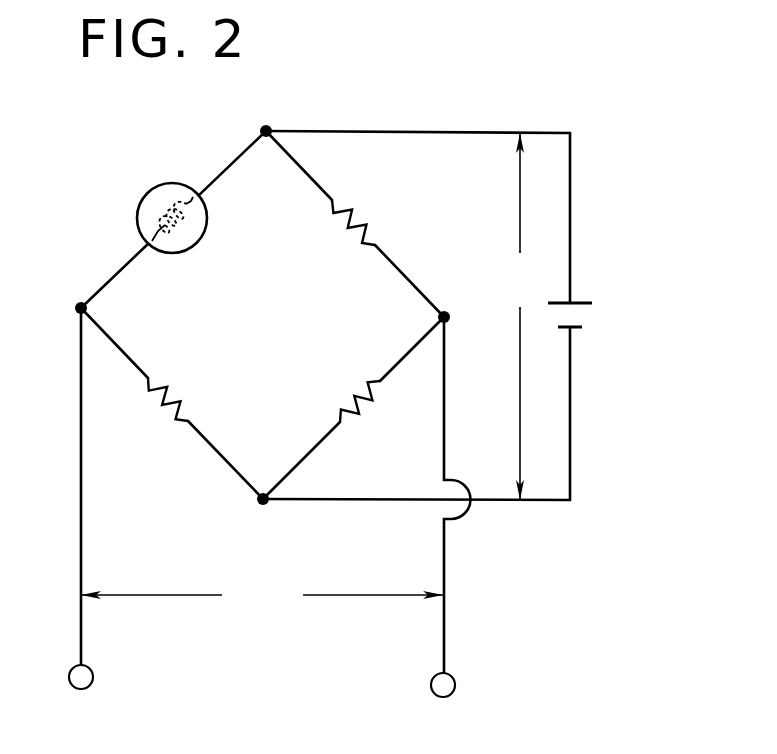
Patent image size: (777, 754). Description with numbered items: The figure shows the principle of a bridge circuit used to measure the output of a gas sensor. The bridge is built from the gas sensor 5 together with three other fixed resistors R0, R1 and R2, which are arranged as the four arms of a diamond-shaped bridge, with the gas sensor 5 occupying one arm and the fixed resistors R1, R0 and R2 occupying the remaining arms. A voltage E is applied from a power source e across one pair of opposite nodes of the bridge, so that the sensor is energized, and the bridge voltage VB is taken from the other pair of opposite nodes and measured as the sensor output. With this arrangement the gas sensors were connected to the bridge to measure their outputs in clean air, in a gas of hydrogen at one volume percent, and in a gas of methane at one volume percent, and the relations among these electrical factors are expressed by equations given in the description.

The gas sensor 5 is at (143, 196).
The fixed resistor R1 is at (376, 211).
The fixed resistor R0 is at (154, 417).
The fixed resistor R2 is at (373, 420).
The power source e is at (577, 300).
The voltage E is at (517, 316).
The bridge voltage VB is at (262, 595).